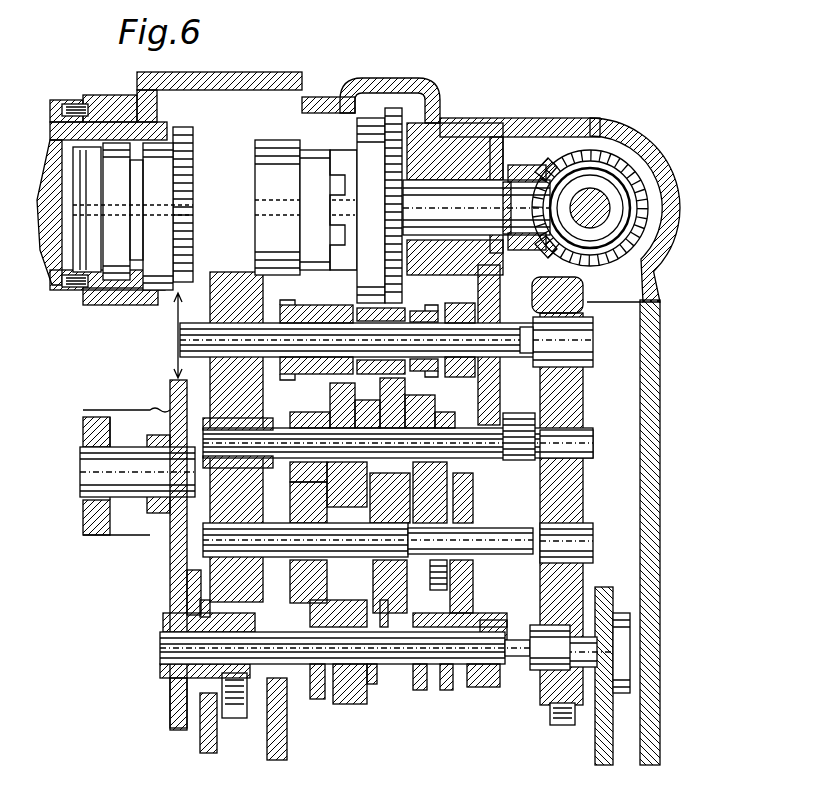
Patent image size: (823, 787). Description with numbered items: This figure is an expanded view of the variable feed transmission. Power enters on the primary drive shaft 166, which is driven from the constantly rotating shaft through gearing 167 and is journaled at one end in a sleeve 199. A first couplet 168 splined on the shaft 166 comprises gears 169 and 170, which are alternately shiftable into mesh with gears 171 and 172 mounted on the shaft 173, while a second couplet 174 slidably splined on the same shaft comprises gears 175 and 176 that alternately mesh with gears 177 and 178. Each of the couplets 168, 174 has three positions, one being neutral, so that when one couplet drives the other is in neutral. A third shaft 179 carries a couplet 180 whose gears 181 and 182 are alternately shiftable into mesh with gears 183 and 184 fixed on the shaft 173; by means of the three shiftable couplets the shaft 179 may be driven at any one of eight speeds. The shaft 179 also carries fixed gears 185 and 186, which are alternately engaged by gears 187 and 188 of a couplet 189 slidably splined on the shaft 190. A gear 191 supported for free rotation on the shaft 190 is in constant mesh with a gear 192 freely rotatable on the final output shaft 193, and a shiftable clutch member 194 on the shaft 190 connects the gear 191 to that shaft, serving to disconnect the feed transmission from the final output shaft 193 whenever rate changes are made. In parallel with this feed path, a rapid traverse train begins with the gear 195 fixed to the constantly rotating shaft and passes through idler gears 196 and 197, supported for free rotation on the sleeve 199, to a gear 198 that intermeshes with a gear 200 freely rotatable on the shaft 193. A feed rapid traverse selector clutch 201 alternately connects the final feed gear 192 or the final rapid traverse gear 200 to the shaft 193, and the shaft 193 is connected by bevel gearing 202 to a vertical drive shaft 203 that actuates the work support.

The primary drive shaft 166 is at (400, 690).
The gearing 167 is at (268, 720).
The first couplet 168 is at (345, 705).
The gear 169 is at (330, 695).
The gear 170 is at (365, 690).
The gear 171 is at (300, 585).
The gear 172 is at (385, 578).
The shaft 173 is at (500, 537).
The second couplet 174 is at (470, 690).
The gear 175 is at (418, 692).
The gear 176 is at (443, 692).
The gear 177 is at (422, 586).
The gear 178 is at (473, 583).
The third shaft 179 is at (489, 445).
The couplet 180 is at (335, 398).
The gear 181 is at (350, 386).
The gear 182 is at (365, 412).
The gear 183 is at (300, 497).
The gear 184 is at (380, 660).
The fixed gear 185 is at (425, 393).
The fixed gear 186 is at (515, 418).
The gear 187 is at (438, 309).
The gear 188 is at (494, 270).
The couplet 189 is at (470, 306).
The shaft 190 is at (600, 335).
The gear 191 is at (380, 302).
The gear 192 is at (393, 105).
The final output shaft 193 is at (450, 200).
The shiftable clutch member 194 is at (318, 302).
The gear 195 is at (200, 739).
The idler gear 196 is at (187, 583).
The idler gear 197 is at (200, 598).
The gear 198 is at (170, 392).
The sleeve 199 is at (163, 626).
The gear 200 is at (190, 163).
The feed rapid traverse selector clutch 201 is at (290, 147).
The bevel gearing 202 is at (540, 165).
The vertical drive shaft 203 is at (603, 207).